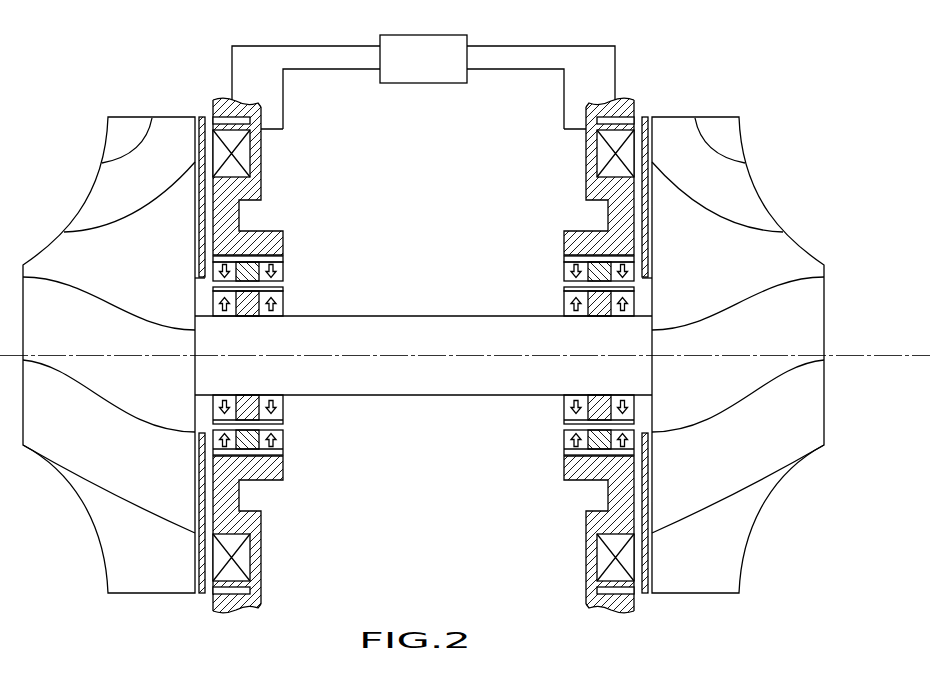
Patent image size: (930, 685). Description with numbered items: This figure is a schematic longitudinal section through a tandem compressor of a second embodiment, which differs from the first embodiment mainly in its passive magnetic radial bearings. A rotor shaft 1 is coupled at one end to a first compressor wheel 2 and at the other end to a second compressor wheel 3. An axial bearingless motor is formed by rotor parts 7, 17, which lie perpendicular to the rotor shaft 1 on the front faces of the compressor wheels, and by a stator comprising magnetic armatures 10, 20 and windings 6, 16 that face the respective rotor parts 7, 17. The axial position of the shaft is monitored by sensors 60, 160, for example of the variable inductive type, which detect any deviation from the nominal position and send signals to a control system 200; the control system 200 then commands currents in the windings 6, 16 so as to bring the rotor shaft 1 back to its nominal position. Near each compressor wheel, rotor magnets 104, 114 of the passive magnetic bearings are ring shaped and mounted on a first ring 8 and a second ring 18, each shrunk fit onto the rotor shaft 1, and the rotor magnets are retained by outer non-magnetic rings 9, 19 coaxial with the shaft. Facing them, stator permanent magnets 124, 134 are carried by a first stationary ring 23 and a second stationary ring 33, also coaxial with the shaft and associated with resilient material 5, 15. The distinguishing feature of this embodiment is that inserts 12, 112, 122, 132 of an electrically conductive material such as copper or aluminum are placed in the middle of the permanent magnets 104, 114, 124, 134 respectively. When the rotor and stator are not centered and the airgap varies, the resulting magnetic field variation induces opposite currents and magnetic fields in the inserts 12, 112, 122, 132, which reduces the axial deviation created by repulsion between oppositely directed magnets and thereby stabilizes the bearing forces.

The rotor shaft 1 is at (430, 364).
The first compressor wheel 2 is at (790, 335).
The second compressor wheel 3 is at (69, 333).
The resilient material 5 is at (588, 235).
The winding 6 is at (600, 156).
The rotor part 7 is at (648, 239).
The first ring 8 is at (571, 317).
The outer non-magnetic ring 9 is at (563, 412).
The magnetic armature 10 is at (634, 600).
The insert 12 is at (599, 398).
The resilient material 15 is at (258, 237).
The winding 16 is at (246, 156).
The rotor part 17 is at (199, 240).
The second ring 18 is at (276, 317).
The outer non-magnetic ring 19 is at (284, 412).
The magnetic armature 20 is at (213, 600).
The first stationary ring 23 is at (564, 262).
The second stationary ring 33 is at (283, 262).
The sensor 60 is at (622, 120).
The rotor magnet 104 is at (563, 300).
The insert 112 is at (247, 398).
The rotor magnet 114 is at (284, 300).
The insert 122 is at (597, 440).
The permanent magnet 124 is at (563, 270).
The insert 132 is at (250, 440).
The permanent magnet 134 is at (284, 270).
The sensor 160 is at (225, 120).
The control system 200 is at (437, 71).